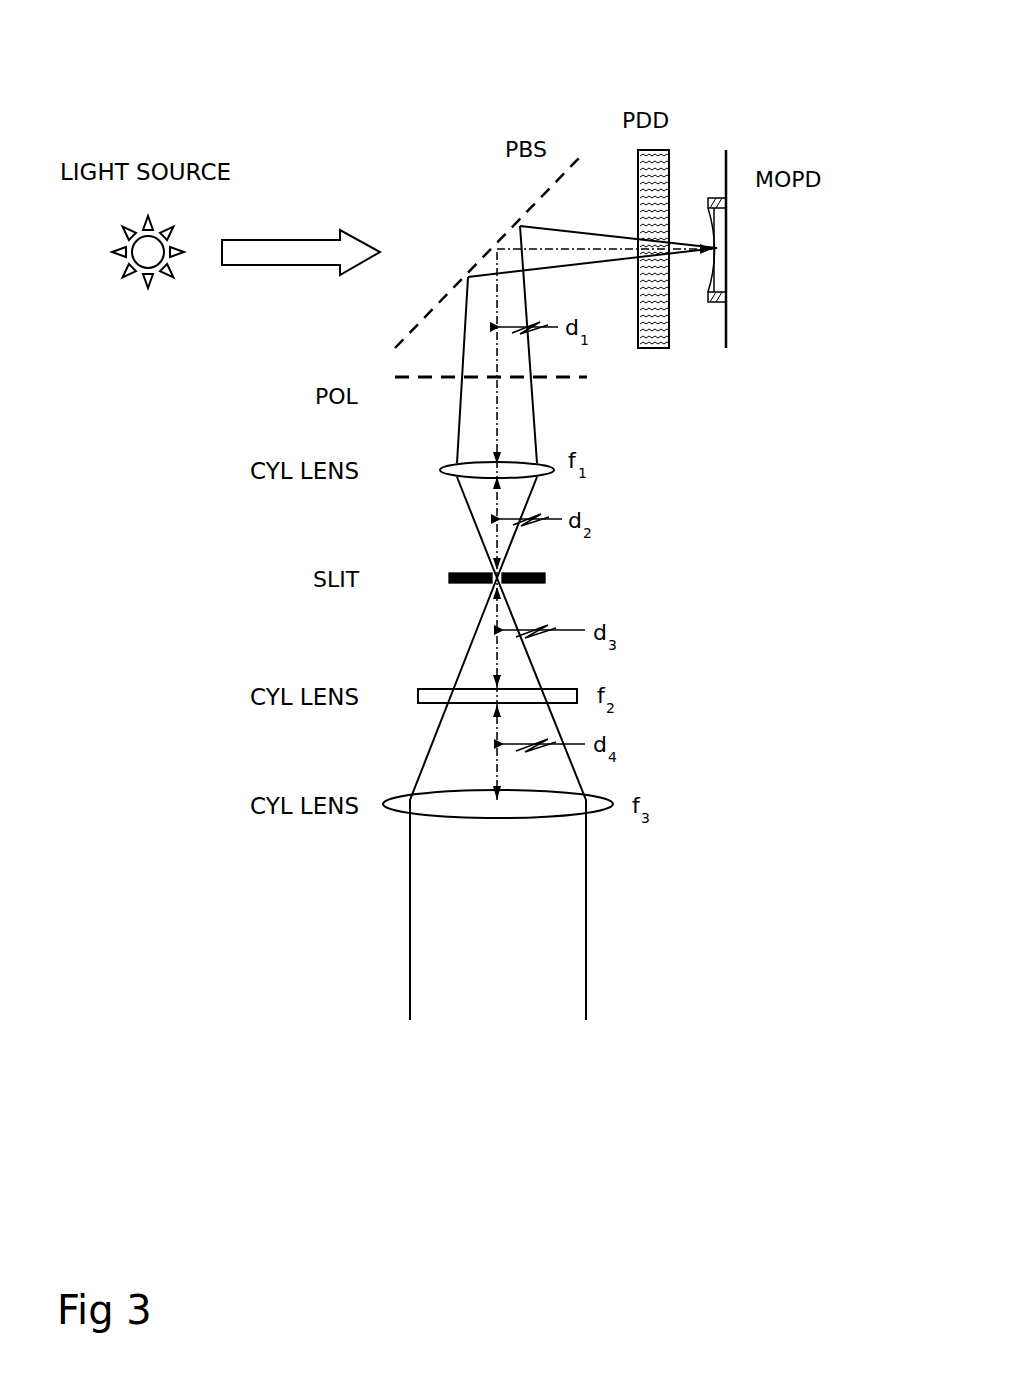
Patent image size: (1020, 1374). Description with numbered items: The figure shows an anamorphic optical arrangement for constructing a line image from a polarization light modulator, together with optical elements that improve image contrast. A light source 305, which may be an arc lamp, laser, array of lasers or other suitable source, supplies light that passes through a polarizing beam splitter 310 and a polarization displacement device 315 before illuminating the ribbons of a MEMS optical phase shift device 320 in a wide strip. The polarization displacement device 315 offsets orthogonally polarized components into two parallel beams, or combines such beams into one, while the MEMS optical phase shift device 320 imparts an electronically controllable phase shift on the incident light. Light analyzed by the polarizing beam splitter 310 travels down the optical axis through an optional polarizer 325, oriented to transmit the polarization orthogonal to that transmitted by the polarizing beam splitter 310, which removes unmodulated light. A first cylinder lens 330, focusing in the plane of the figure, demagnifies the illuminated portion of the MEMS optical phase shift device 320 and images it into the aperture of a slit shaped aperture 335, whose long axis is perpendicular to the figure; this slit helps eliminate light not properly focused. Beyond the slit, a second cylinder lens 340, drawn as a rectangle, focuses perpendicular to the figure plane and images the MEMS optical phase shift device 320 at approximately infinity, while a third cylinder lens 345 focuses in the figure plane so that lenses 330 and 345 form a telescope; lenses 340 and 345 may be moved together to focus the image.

The light source 305 is at (128, 283).
The polarizing beam splitter 310 is at (580, 162).
The polarization displacement device 315 is at (668, 153).
The MEMS optical phase shift device 320 is at (734, 183).
The polarizer 325 is at (575, 377).
The cylinder lens 330 is at (550, 477).
The slit shaped aperture 335 is at (553, 578).
The cylinder lens 340 is at (578, 688).
The cylinder lens 345 is at (600, 793).